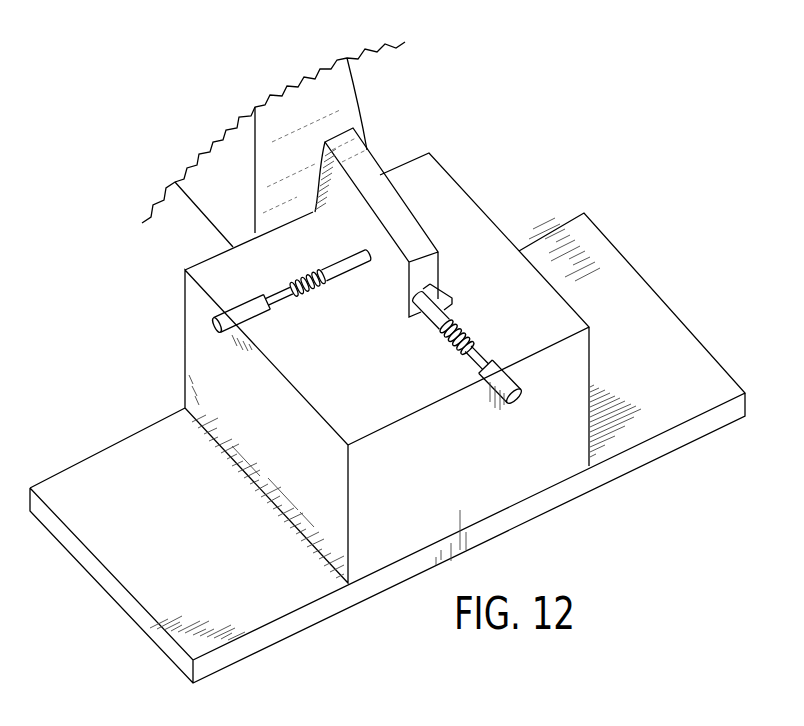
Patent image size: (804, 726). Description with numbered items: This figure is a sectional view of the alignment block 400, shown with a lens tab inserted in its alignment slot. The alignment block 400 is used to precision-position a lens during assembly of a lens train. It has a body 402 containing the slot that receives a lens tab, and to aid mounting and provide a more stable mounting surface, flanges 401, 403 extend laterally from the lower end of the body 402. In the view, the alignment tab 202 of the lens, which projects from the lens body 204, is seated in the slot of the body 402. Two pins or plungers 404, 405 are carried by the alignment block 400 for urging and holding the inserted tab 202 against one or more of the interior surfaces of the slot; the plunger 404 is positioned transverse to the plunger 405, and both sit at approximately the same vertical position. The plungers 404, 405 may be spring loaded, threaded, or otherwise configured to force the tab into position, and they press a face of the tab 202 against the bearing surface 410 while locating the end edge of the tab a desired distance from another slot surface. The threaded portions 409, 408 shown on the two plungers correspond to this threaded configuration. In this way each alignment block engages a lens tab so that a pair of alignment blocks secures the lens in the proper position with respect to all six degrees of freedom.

The alignment block 400 is at (524, 88).
The flange 401 is at (669, 352).
The body 402 is at (457, 183).
The flange 403 is at (263, 598).
The lens body 204 is at (332, 74).
The alignment tab 202 is at (372, 166).
The plunger 405 is at (214, 334).
The first threaded screw 409 is at (278, 296).
The bearing surface 410 is at (440, 296).
The second threaded screw 408 is at (447, 330).
The plunger 404 is at (524, 396).